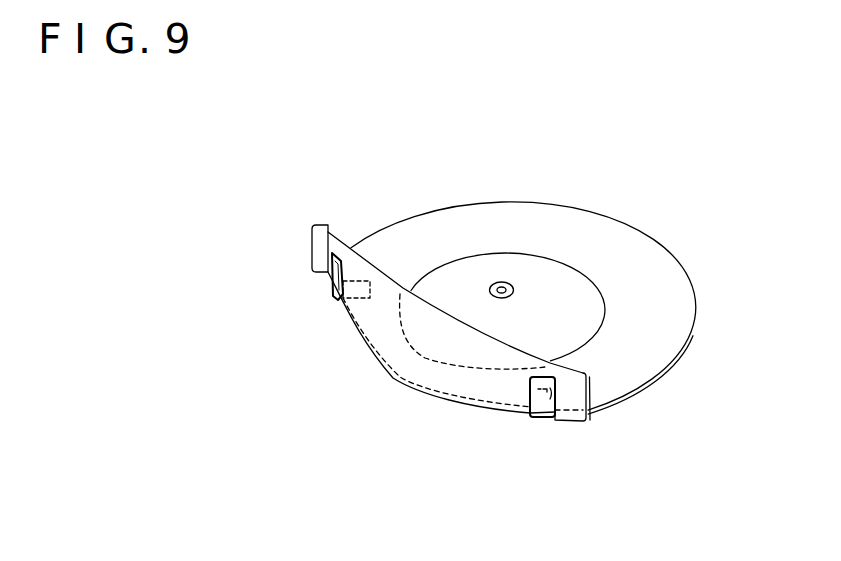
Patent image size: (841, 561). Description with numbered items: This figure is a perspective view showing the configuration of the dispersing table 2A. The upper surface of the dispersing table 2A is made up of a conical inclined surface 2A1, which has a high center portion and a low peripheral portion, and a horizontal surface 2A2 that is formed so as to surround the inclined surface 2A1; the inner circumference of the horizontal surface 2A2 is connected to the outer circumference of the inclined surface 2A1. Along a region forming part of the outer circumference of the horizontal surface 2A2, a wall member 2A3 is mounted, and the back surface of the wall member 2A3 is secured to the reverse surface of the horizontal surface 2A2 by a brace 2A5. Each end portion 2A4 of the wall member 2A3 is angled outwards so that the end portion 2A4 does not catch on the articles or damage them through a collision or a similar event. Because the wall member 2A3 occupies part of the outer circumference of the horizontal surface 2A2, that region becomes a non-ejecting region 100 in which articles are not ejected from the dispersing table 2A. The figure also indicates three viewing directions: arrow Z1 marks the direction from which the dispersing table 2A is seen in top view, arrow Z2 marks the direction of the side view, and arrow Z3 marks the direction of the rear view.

The non-ejecting region 100 is at (396, 353).
The dispersing table 2A is at (635, 155).
The conical inclined surface 2A1 is at (527, 282).
The horizontal surface 2A2 is at (658, 290).
The wall member 2A3 is at (430, 318).
The end portion 2A4 is at (321, 213).
The brace 2A5 is at (329, 275).
The arrow Z1 is at (505, 136).
The arrow Z2 is at (685, 392).
The arrow Z3 is at (361, 408).